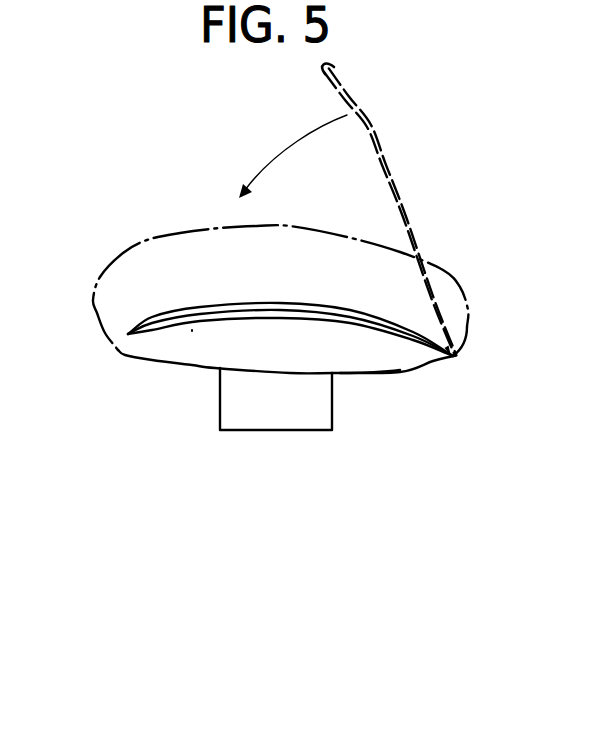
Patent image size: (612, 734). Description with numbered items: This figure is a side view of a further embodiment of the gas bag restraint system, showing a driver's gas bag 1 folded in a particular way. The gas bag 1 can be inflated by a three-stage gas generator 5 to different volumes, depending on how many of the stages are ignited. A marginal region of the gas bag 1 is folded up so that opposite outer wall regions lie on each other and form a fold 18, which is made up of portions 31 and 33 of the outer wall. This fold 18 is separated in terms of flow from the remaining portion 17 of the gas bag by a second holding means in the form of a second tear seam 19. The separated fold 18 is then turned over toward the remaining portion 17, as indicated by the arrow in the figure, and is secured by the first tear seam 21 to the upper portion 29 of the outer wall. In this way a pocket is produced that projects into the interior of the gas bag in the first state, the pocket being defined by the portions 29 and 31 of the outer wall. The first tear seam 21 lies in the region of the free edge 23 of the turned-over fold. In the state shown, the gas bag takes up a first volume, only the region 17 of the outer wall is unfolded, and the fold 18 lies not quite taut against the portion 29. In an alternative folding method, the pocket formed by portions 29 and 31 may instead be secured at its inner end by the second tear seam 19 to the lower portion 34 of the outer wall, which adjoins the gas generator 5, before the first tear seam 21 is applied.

The gas bag 1 is at (186, 291).
The three-stage gas generator 5 is at (300, 410).
The remaining portion of the gas bag 17 is at (120, 352).
The fold 18 is at (373, 126).
The second tear seam 19 is at (452, 357).
The first tear seam 21 is at (132, 321).
The free edge 23 is at (127, 338).
The upper portion of the outer wall 29 is at (191, 330).
The portion of the outer wall 31 is at (405, 229).
The portion of the outer wall 33 is at (392, 178).
The lower portion of the outer wall 34 is at (397, 375).